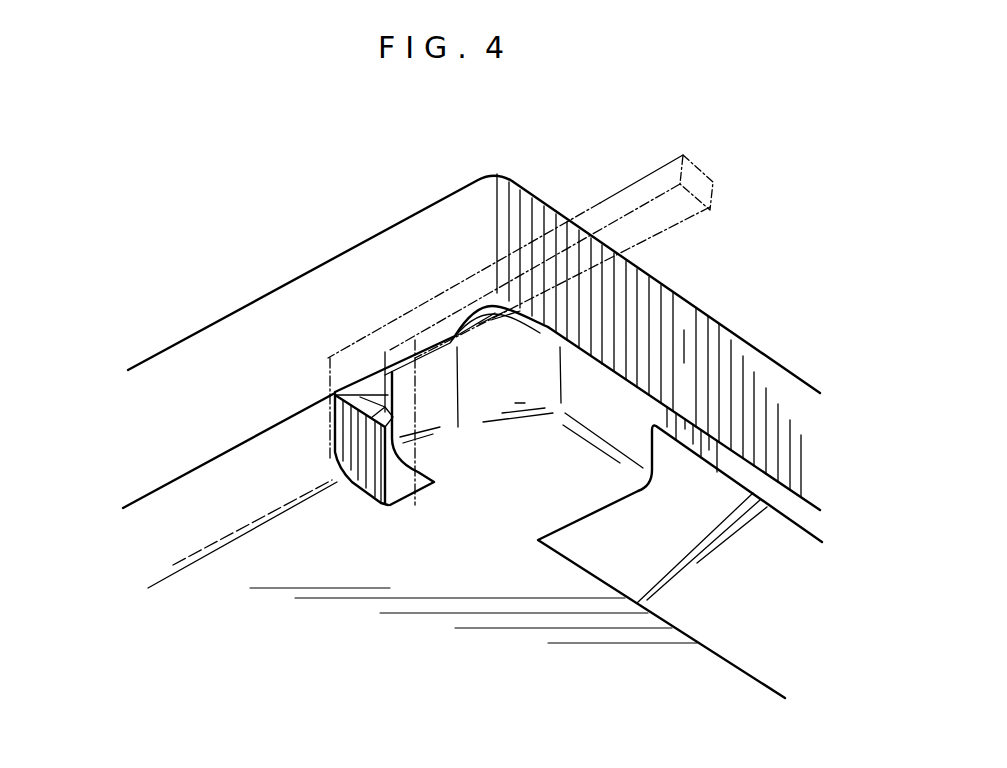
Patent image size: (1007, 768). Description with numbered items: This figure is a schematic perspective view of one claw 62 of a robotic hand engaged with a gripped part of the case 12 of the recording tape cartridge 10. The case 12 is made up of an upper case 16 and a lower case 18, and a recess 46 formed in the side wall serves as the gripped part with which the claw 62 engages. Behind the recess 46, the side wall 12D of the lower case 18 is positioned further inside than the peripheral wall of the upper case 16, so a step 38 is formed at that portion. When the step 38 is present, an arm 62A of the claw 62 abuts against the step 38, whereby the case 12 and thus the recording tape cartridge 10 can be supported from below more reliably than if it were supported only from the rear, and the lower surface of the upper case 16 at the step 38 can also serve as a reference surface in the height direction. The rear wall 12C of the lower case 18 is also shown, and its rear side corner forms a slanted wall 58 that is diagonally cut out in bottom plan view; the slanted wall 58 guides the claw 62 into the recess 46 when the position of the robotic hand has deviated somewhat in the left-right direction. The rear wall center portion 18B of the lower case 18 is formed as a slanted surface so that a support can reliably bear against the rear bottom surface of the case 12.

The recording tape cartridge 10 is at (351, 246).
The case 12 is at (179, 490).
The upper case 16 is at (157, 438).
The lower case 18 is at (177, 527).
The rear wall center portion 18B is at (712, 606).
The rear wall 12C is at (613, 417).
The side wall 12D is at (440, 397).
The step 38 is at (428, 322).
The recess 46 is at (393, 507).
The slanted wall 58 is at (505, 382).
The claw 62 is at (413, 505).
The arm 62A is at (630, 183).